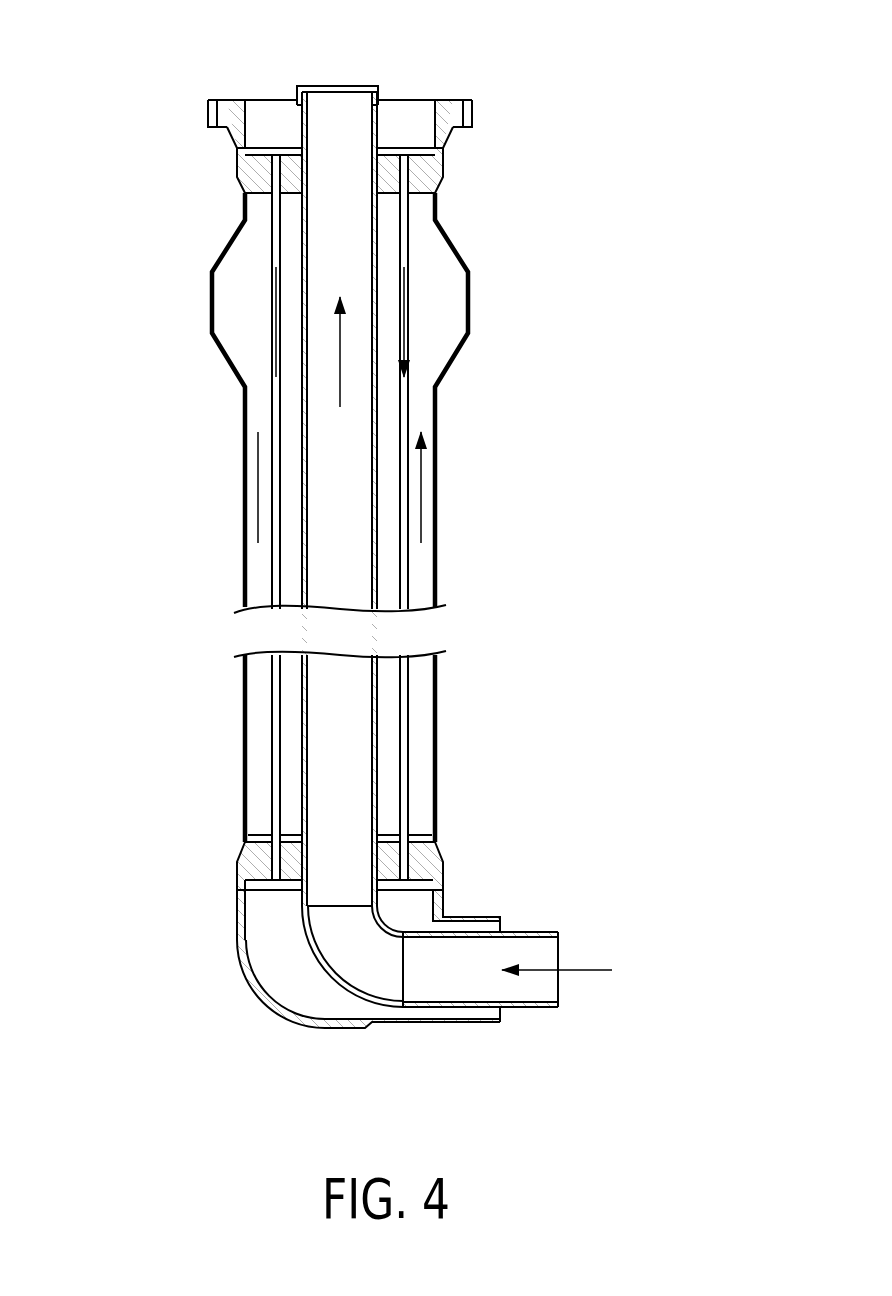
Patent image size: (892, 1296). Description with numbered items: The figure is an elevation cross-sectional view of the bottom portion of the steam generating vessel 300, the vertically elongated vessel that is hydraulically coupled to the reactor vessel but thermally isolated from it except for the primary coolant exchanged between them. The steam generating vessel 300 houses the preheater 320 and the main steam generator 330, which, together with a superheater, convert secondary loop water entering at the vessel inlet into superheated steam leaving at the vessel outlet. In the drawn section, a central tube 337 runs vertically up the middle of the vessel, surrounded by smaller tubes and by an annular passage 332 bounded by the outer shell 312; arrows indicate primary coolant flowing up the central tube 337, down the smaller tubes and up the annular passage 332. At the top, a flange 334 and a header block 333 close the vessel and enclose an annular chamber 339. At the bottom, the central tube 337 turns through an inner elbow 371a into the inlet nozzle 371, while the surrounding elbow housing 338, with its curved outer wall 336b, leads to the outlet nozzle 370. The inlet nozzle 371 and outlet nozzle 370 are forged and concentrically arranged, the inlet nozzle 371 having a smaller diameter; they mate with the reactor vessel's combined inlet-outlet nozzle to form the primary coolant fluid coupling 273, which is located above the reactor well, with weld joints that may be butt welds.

The steam generating vessel 300 is at (172, 77).
The annular chamber 339 is at (402, 118).
The flange 334 is at (209, 129).
The end hub / header block 333 is at (440, 176).
The main steam generator 330 is at (410, 357).
The outer shell (upper section) 312 is at (243, 556).
The annular passage (upflow) 332 is at (408, 567).
The preheater 320 is at (257, 762).
The central tube 337 is at (377, 762).
The elbow housing 338 is at (265, 950).
The elbow bend outer wall 336b is at (262, 994).
The inner elbow tube 371a is at (320, 964).
The inlet nozzle 371 is at (558, 931).
The outlet nozzle 370 is at (502, 1027).
The primary coolant fluid coupling 273 is at (537, 904).